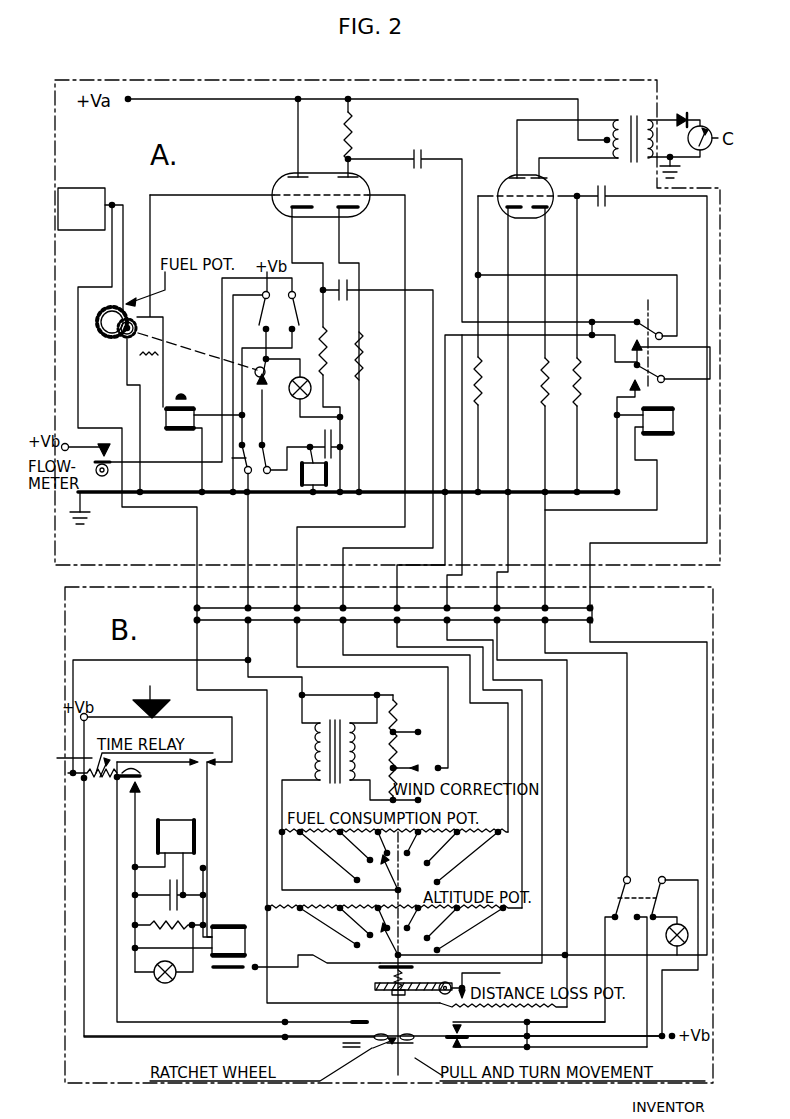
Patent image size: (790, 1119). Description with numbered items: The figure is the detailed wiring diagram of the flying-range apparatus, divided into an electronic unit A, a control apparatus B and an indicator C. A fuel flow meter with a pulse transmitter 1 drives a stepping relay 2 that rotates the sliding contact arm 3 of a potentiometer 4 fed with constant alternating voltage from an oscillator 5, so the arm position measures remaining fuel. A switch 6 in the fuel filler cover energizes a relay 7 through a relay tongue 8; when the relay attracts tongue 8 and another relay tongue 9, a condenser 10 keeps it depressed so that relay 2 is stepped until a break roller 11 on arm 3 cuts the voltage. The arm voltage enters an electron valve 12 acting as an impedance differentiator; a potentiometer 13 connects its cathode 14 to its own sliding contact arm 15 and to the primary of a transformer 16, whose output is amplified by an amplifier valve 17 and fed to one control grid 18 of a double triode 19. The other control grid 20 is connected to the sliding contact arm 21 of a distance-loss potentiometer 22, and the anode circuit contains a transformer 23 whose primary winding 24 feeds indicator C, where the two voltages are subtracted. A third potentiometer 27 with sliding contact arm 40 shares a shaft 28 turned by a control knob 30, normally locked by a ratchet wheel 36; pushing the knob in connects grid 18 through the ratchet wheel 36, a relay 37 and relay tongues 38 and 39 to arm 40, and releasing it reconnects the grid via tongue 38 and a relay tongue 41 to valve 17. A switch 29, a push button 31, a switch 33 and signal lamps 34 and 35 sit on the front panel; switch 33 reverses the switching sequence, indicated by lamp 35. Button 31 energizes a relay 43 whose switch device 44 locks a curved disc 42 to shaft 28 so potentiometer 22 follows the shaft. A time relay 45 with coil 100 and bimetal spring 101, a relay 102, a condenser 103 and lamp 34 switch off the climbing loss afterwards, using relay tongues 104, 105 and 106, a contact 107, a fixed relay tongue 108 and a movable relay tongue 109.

The pulse transmitter 1 is at (98, 444).
The stepping relay 2 is at (191, 432).
The sliding contact arm 3 is at (116, 336).
The potentiometer 4 is at (106, 310).
The oscillator 5 is at (84, 232).
The switch 6 is at (297, 318).
The relay 7 is at (316, 488).
The relay tongue 8 is at (264, 460).
The relay tongue 9 is at (240, 462).
The condenser 10 is at (335, 449).
The break roller 11 is at (283, 381).
The electron valve 12 is at (276, 185).
The potentiometer 13 is at (393, 857).
The cathode 14 is at (310, 206).
The sliding contact arm 15 is at (371, 885).
The transformer 16 is at (333, 782).
The amplifier valve 17 is at (362, 176).
The control grid 18 is at (502, 188).
The double triode 19 is at (511, 212).
The control grid 20 is at (550, 192).
The sliding contact arm 21 is at (500, 973).
The potentiometer 22 is at (452, 1023).
The transformer 23 is at (632, 114).
The primary winding 24 is at (650, 162).
The potentiometer 27 is at (402, 895).
The shaft 28 is at (395, 1049).
The switch 29 is at (424, 769).
The control knob 30 is at (407, 1050).
The push button 31 is at (153, 694).
The switch 33 is at (634, 899).
The signal lamp 34 is at (168, 984).
The signal lamp 35 is at (669, 912).
The ratchet wheel 36 is at (375, 1032).
The relay 37 is at (674, 419).
The relay tongue 38 is at (654, 322).
The relay tongue 39 is at (657, 371).
The sliding contact arm 40 is at (393, 932).
The relay tongue 41 is at (629, 320).
The curved disc 42 is at (444, 982).
The relay 43 is at (226, 924).
The switch device 44 is at (378, 966).
The time relay 45 is at (94, 789).
The coil 100 is at (56, 758).
The bimetal spring 101 is at (135, 770).
The relay 102 is at (196, 834).
The condenser 103 is at (179, 892).
The relay tongue 104 is at (333, 1043).
The relay tongue 105 is at (178, 770).
The relay tongue 106 is at (320, 1022).
The contact 107 is at (137, 796).
The fixed relay tongue 108 is at (229, 758).
The movable relay tongue 109 is at (209, 790).